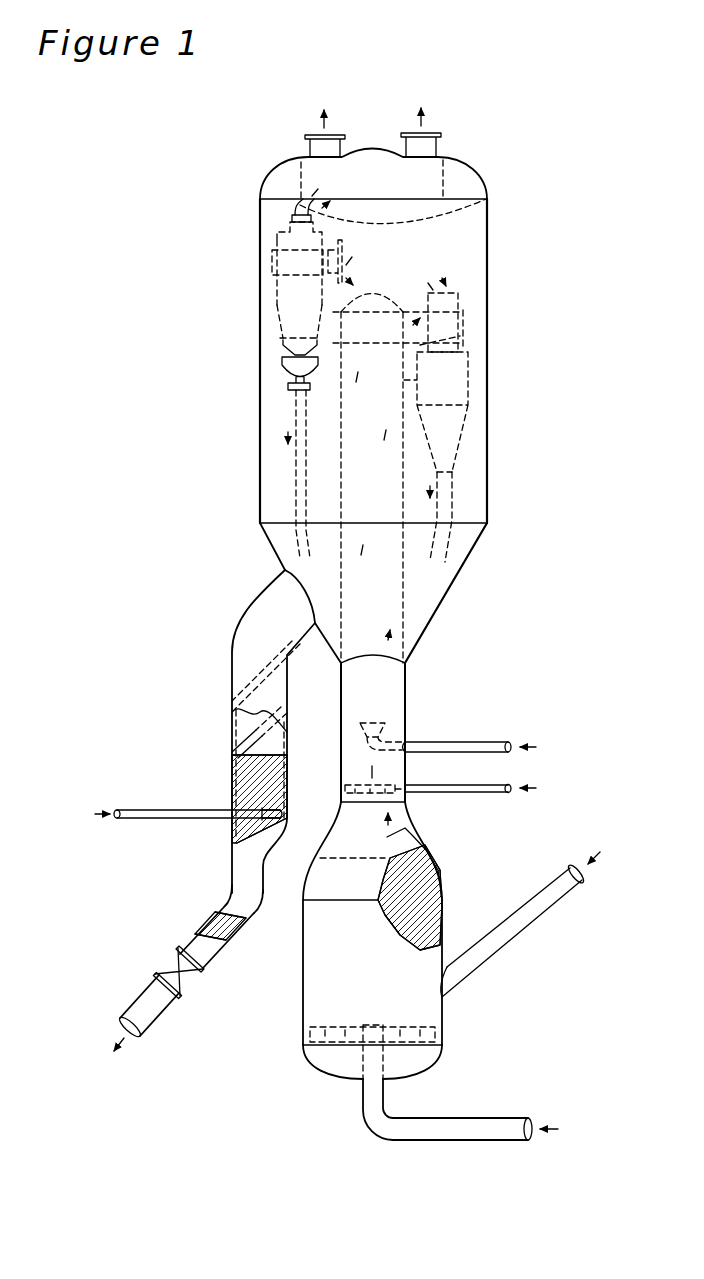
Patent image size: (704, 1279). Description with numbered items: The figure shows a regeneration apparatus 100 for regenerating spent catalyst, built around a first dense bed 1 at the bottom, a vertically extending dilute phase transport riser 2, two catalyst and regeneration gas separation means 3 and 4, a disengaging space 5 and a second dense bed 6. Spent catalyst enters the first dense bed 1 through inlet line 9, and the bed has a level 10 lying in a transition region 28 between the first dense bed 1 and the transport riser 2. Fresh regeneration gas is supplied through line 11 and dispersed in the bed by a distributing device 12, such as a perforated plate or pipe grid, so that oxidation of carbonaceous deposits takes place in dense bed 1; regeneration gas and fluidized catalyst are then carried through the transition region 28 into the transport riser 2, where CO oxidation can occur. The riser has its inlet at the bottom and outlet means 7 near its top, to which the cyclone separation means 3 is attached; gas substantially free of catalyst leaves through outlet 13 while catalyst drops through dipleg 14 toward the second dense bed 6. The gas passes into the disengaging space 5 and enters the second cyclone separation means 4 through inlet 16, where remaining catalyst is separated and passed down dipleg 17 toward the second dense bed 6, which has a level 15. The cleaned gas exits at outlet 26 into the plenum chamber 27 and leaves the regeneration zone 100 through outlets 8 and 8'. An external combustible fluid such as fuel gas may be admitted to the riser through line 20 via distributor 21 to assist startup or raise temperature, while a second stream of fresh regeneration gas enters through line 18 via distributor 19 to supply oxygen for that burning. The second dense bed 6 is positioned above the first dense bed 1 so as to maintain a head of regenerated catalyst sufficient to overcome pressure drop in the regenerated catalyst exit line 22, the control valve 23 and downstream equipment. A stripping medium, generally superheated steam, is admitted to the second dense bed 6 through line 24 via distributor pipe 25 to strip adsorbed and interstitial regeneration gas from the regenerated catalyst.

The regeneration apparatus 100 is at (492, 203).
The first dense bed 1 is at (441, 880).
The dilute phase transport riser 2 is at (340, 447).
The catalyst and regeneration gas separation means 3 is at (466, 384).
The separation means 4 is at (277, 294).
The disengaging space 5 is at (443, 259).
The second dense bed 6 is at (250, 801).
The outlet means 7 is at (402, 318).
The regeneration gas outlet 8 is at (304, 128).
The regeneration gas outlet 8' is at (443, 126).
The inlet line 9 is at (530, 930).
The level 10 is at (406, 856).
The line 11 is at (462, 1117).
The distributing device 12 is at (322, 1027).
The outlet 13 is at (458, 293).
The dipleg 14 is at (453, 500).
The level 15 is at (255, 756).
The inlet 16 is at (346, 252).
The dipleg 17 is at (295, 474).
The line 18 is at (470, 785).
The distributor 19 is at (362, 785).
The line 20 is at (470, 742).
The distributor 21 is at (386, 723).
The regenerated catalyst exit line 22 is at (232, 894).
The control valve 23 is at (170, 972).
The line 24 is at (142, 808).
The distributor pipe 25 is at (238, 832).
The outlet 26 is at (300, 206).
The plenum chamber 27 is at (300, 186).
The transition region 28 is at (358, 836).